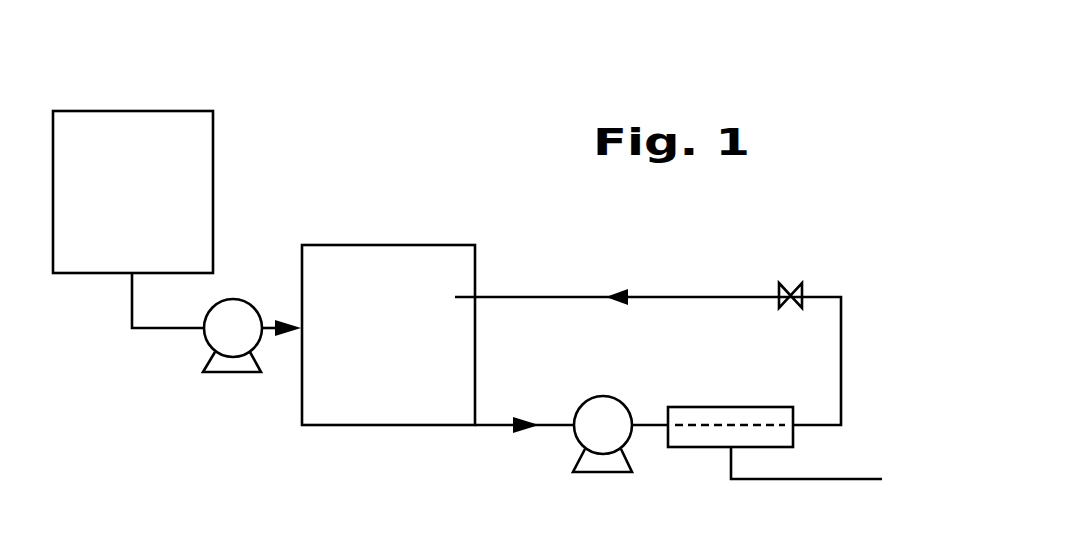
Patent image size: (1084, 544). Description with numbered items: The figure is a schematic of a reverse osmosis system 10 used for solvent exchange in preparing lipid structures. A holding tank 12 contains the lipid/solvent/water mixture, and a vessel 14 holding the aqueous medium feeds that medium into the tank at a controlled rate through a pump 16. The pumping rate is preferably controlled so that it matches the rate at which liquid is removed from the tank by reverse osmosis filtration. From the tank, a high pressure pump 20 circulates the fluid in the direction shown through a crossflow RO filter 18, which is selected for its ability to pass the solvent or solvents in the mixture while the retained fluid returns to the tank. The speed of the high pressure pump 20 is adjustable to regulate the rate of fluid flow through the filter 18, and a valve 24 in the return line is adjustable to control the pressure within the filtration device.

The reverse osmosis system 10 is at (396, 186).
The holding tank 12 is at (478, 346).
The vessel 14 is at (213, 167).
The pump 16 is at (227, 374).
The crossflow RO filter 18 is at (735, 392).
The high pressure pump 20 is at (612, 397).
The valve 24 is at (796, 280).